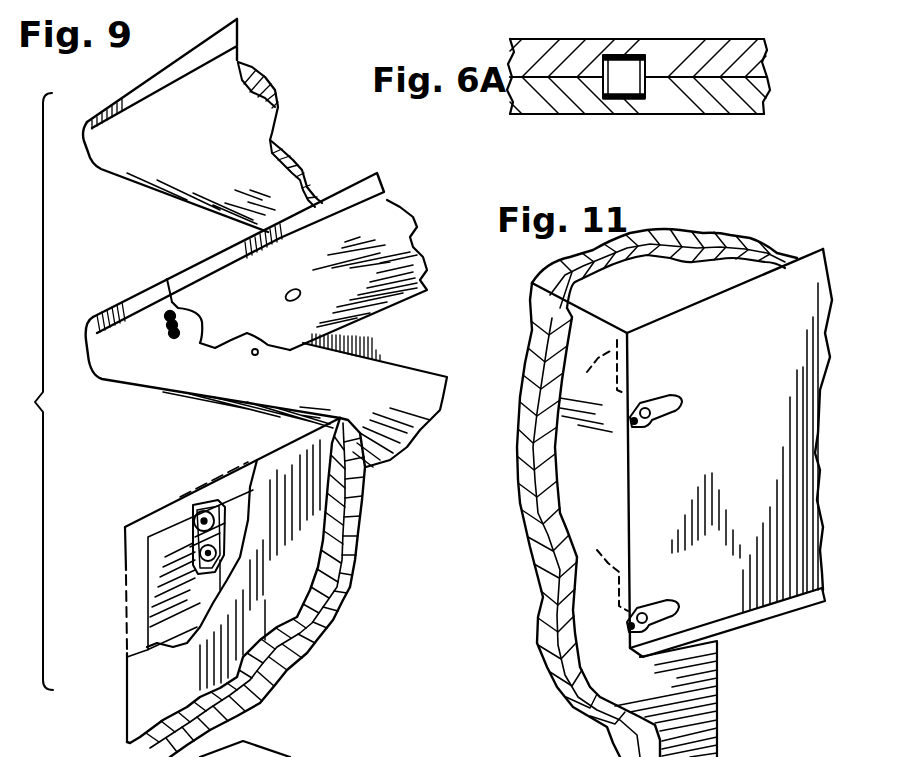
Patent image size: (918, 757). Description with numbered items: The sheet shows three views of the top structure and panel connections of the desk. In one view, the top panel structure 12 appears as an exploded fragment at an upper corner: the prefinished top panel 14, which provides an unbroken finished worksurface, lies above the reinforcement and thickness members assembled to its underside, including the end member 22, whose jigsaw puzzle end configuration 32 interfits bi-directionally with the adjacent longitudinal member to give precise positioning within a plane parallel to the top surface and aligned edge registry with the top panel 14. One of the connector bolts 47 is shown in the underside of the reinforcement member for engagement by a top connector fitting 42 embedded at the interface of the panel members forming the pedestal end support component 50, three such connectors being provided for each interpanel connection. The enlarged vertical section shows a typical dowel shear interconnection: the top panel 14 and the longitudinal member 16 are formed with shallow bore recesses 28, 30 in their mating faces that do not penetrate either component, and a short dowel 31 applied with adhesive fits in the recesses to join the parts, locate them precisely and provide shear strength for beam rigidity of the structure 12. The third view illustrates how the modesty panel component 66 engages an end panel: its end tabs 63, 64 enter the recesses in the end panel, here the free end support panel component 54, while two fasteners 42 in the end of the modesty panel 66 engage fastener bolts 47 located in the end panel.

In FIG. 9, the top panel structure 12 is at (362, 756).
In FIG. 11, the top panel structure 12 is at (707, 232).
In FIG. 9, the top panel 14 is at (137, 85).
In FIG. 6A, the top panel 14 is at (748, 46).
In FIG. 6A, the longitudinal reinforcement member 16 is at (725, 113).
In FIG. 9, the end reinforcement member 22 is at (362, 301).
In FIG. 6A, the shallow bore recess 28 is at (633, 53).
In FIG. 6A, the shallow bore recess 30 is at (622, 85).
In FIG. 6A, the dowel 31 is at (619, 100).
In FIG. 9, the jigsaw puzzle end configuration 32 is at (200, 345).
In FIG. 9, the fitting 42 is at (186, 520).
In FIG. 11, the fitting 42 is at (673, 397).
In FIG. 9, the mounting bolt 47 is at (165, 320).
In FIG. 9, the pedestal end support component 50 is at (355, 585).
In FIG. 11, the free end support panel component 54 is at (530, 547).
In FIG. 11, the tab 63 is at (599, 369).
In FIG. 11, the tab 64 is at (606, 566).
In FIG. 11, the modesty panel component 66 is at (754, 497).